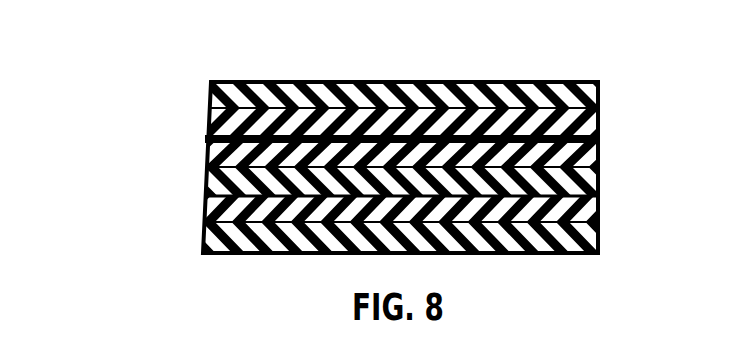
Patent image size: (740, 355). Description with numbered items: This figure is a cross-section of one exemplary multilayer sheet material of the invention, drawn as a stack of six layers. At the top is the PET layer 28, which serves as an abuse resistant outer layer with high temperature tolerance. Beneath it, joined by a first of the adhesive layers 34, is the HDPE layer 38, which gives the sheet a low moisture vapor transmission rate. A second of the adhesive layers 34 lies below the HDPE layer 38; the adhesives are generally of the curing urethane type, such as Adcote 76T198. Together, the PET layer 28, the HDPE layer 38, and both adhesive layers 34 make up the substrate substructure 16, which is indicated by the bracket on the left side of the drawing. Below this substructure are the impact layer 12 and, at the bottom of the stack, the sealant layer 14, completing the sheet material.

The impact layer 12 is at (592, 221).
The sealant layer 14 is at (592, 246).
The substrate substructure 16 is at (192, 82).
The PET layer 28 is at (601, 105).
The adhesive layers 34 is at (600, 126).
The HDPE layer 38 is at (606, 166).